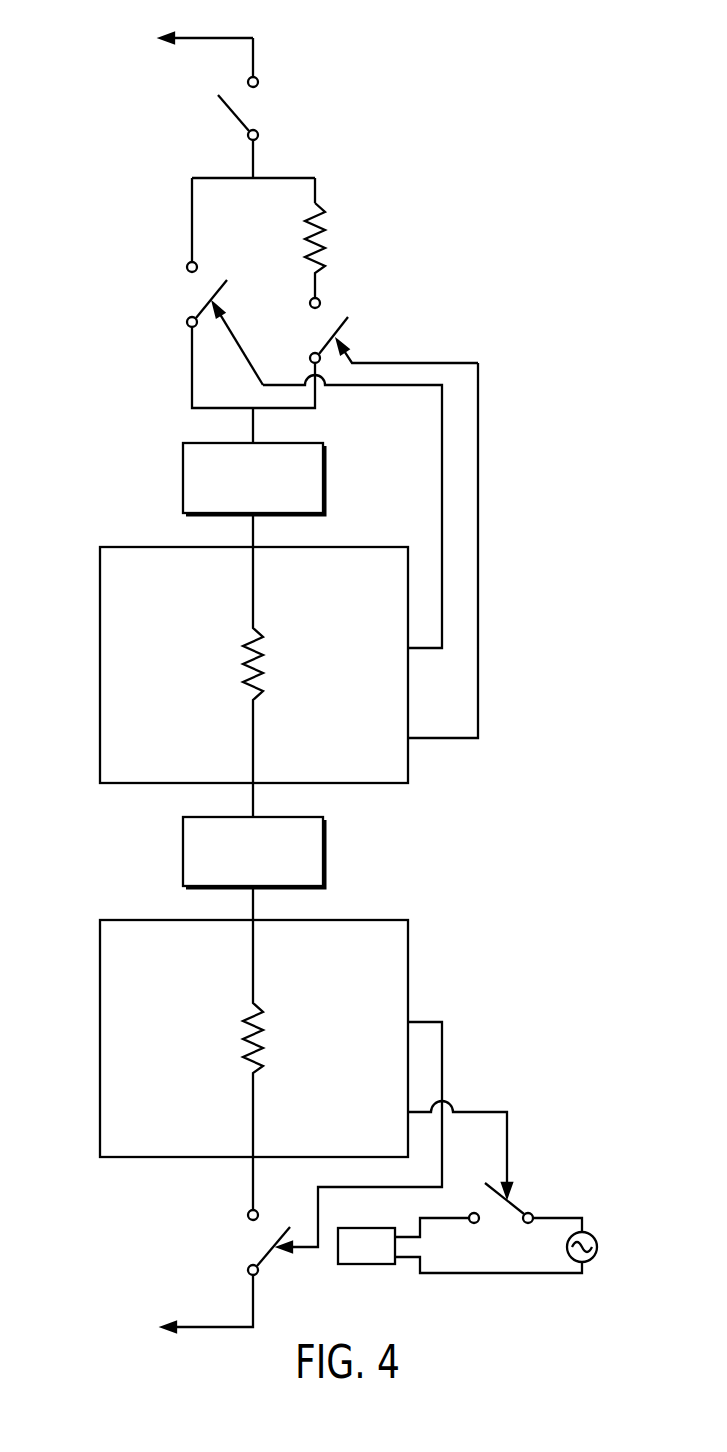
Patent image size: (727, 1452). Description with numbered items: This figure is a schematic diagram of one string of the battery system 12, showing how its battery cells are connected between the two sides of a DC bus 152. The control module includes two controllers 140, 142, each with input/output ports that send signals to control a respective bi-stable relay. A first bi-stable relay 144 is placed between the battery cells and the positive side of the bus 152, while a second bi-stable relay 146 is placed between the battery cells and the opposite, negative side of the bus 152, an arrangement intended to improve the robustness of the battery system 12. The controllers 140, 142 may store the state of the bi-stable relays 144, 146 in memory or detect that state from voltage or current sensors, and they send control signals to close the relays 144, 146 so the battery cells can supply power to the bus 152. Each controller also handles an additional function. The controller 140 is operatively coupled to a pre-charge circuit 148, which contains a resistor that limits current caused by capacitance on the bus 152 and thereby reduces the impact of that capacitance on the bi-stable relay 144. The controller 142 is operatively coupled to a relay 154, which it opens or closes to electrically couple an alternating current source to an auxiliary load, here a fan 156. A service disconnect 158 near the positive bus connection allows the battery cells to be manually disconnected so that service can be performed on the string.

The battery system 12 is at (504, 80).
The controller 140 is at (100, 665).
The controller 142 is at (100, 1040).
The first bi-stable relay 144 is at (220, 289).
The second bi-stable relay 146 is at (268, 1257).
The pre-charge circuit 148 is at (340, 327).
The DC bus 152 is at (213, 38).
The relay 154 is at (518, 1206).
The fan 156 is at (368, 1265).
The service disconnect 158 is at (233, 113).